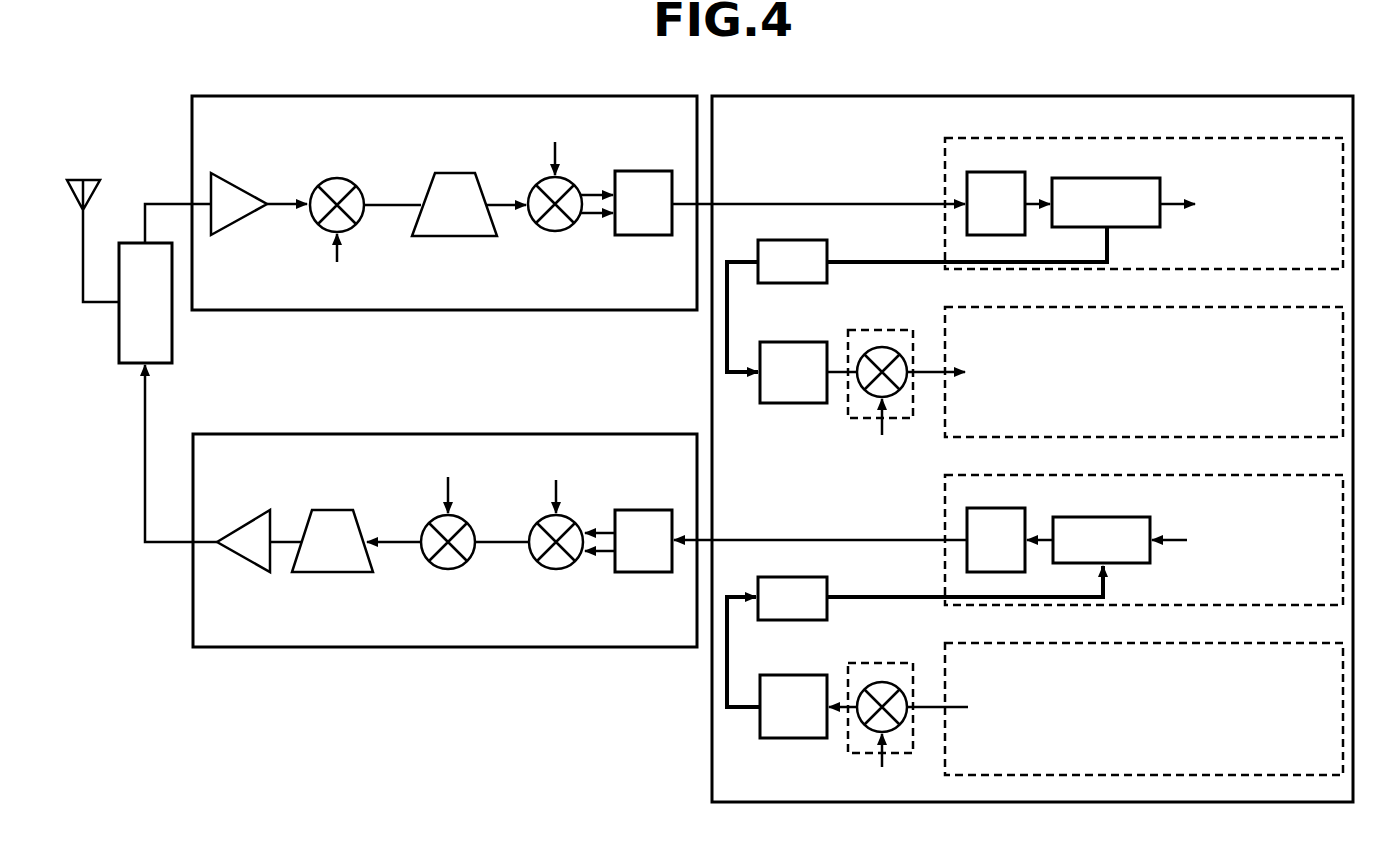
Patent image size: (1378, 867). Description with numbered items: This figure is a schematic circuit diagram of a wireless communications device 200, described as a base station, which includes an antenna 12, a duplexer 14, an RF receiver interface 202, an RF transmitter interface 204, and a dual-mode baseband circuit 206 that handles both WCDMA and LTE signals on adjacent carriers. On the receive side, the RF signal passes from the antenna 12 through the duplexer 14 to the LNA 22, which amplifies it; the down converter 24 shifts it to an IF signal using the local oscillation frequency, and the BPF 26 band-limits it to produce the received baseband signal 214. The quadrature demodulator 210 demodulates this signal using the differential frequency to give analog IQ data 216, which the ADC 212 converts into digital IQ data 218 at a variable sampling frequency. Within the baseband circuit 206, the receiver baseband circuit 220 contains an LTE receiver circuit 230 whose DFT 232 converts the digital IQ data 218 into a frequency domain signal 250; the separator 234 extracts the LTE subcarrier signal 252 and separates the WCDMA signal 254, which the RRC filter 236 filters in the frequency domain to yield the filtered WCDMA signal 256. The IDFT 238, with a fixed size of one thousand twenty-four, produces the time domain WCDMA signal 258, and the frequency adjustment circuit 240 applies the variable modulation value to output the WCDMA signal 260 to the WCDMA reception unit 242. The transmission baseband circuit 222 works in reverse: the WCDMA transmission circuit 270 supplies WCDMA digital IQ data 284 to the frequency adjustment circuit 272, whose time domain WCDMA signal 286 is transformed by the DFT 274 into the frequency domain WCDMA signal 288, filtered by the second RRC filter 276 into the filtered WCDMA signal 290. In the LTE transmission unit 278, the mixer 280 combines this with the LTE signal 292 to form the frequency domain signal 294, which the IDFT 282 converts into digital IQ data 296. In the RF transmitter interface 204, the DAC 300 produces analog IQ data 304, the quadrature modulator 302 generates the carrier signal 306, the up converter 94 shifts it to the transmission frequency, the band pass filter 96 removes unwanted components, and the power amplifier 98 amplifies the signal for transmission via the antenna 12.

The antenna 12 is at (71, 192).
The duplexer 14 is at (119, 340).
The LNA 22 is at (239, 173).
The down converter 24 is at (340, 176).
The BPF 26 is at (457, 173).
The up converter 94 is at (424, 514).
The band pass filter 96 is at (333, 510).
The power amplifier 98 is at (243, 526).
The wireless communications device 200 is at (318, 61).
The RF receiver interface 202 is at (444, 96).
The RF transmitter interface 204 is at (447, 434).
The baseband circuit 206 is at (1033, 96).
The quadrature demodulator 210 is at (543, 230).
The ADC 212 is at (652, 236).
The received baseband signal 214 is at (518, 198).
The analog IQ data 216 is at (597, 216).
The digital IQ data 218 is at (747, 198).
The receiver baseband circuit 220 is at (838, 156).
The transmission baseband circuit 222 is at (838, 498).
The LTE receiver circuit 230 is at (1205, 138).
The DFT 232 is at (967, 180).
The separator 234 is at (1137, 228).
The RRC filter 236 is at (784, 240).
The IDFT 238 is at (787, 404).
The frequency adjustment circuit 240 is at (882, 347).
The WCDMA reception unit 242 is at (1205, 307).
The frequency domain signal 250 is at (1040, 206).
The LTE signal 252 is at (1177, 206).
The WCDMA signal 254 is at (910, 262).
The filtered WCDMA signal 256 is at (728, 310).
The time domain WCDMA signal 258 is at (838, 374).
The WCDMA signal 260 is at (930, 373).
The WCDMA transmission circuit 270 is at (1205, 643).
The frequency adjustment circuit 272 is at (880, 682).
The DFT 274 is at (787, 739).
The second RRC filter 276 is at (784, 577).
The LTE transmission unit 278 is at (1205, 475).
The mixer 280 is at (1137, 564).
The IDFT 282 is at (967, 520).
The WCDMA digital IQ data 284 is at (930, 708).
The time domain WCDMA signal 286 is at (838, 709).
The frequency domain WCDMA signal 288 is at (728, 644).
The filtered WCDMA signal 290 is at (910, 597).
The LTE signal 292 is at (1177, 542).
The frequency domain signal 294 is at (1040, 541).
The digital IQ data 296 is at (743, 540).
The DAC 300 is at (652, 573).
The quadrature modulator 302 is at (545, 567).
The analog IQ data 304 is at (597, 554).
The carrier signal 306 is at (508, 541).